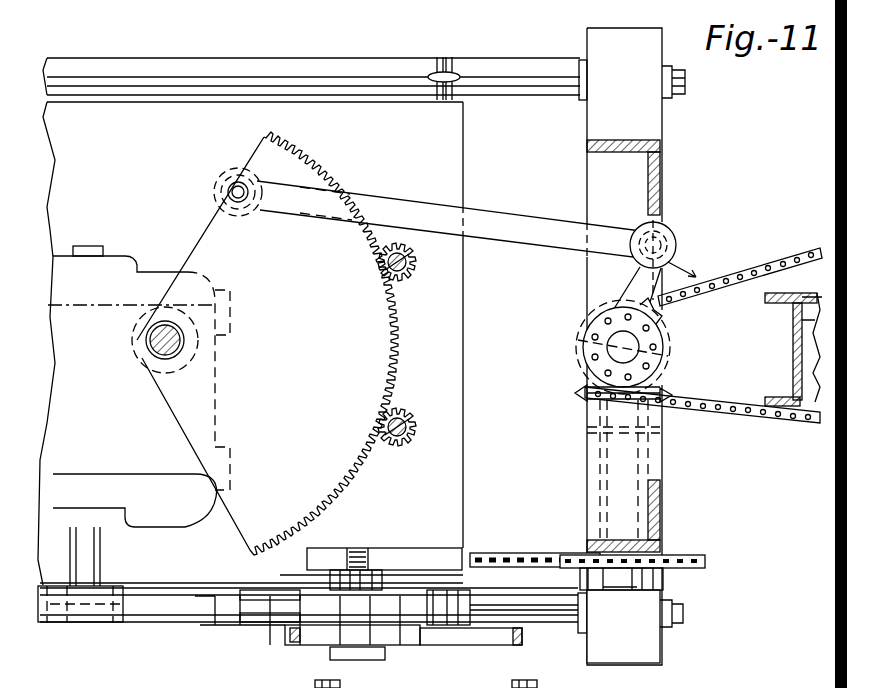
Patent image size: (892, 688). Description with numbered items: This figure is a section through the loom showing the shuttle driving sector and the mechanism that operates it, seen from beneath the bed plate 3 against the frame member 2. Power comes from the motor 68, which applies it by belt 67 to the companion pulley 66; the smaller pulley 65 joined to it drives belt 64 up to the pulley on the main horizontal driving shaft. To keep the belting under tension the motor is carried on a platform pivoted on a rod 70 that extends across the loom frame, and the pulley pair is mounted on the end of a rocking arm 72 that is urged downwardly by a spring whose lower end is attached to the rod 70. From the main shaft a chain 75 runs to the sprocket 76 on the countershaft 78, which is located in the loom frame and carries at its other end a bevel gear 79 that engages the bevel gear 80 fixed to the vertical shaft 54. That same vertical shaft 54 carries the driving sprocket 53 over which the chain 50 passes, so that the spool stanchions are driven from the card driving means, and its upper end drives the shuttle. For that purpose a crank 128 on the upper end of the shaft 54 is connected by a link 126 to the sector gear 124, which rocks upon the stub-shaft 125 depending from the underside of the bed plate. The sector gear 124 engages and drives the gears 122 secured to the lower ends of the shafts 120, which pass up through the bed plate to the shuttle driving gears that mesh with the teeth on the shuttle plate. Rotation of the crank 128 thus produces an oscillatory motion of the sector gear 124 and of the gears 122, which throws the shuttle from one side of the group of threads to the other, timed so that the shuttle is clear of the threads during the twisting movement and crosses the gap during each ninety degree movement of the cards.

The channel frame member 2 is at (808, 396).
The column 3 is at (662, 470).
The chain 50 is at (742, 410).
The driving sprocket 53 is at (655, 323).
The vertical shaft 54 is at (640, 346).
The belt 64 is at (480, 635).
The smaller pulley 65 is at (297, 648).
The companion pulley 66 is at (262, 622).
The belt 67 is at (207, 607).
The motor 68 is at (178, 498).
The rod 70 is at (445, 630).
The rocking arm 72 is at (415, 556).
The chain 75 is at (520, 556).
The sprocket 76 is at (695, 558).
The countershaft 78 is at (628, 596).
The bevel gear 79 is at (665, 405).
The bevel gear 80 is at (585, 355).
The shaft 120 is at (416, 434).
The gear 122 is at (410, 418).
The sector gear 124 is at (400, 345).
The stub-shaft 125 is at (155, 355).
The link 126 is at (527, 220).
The crank 128 is at (630, 285).